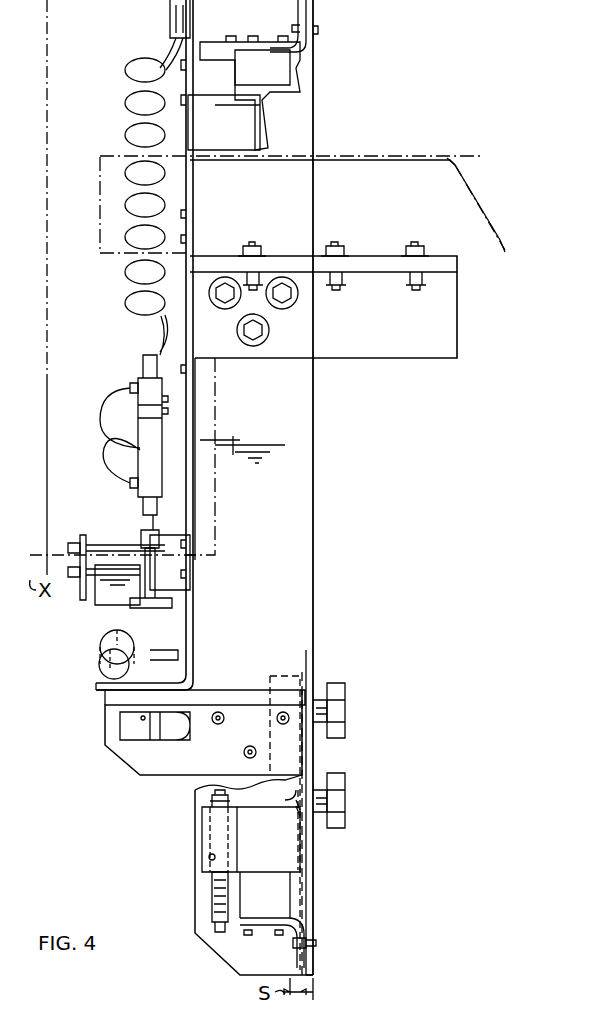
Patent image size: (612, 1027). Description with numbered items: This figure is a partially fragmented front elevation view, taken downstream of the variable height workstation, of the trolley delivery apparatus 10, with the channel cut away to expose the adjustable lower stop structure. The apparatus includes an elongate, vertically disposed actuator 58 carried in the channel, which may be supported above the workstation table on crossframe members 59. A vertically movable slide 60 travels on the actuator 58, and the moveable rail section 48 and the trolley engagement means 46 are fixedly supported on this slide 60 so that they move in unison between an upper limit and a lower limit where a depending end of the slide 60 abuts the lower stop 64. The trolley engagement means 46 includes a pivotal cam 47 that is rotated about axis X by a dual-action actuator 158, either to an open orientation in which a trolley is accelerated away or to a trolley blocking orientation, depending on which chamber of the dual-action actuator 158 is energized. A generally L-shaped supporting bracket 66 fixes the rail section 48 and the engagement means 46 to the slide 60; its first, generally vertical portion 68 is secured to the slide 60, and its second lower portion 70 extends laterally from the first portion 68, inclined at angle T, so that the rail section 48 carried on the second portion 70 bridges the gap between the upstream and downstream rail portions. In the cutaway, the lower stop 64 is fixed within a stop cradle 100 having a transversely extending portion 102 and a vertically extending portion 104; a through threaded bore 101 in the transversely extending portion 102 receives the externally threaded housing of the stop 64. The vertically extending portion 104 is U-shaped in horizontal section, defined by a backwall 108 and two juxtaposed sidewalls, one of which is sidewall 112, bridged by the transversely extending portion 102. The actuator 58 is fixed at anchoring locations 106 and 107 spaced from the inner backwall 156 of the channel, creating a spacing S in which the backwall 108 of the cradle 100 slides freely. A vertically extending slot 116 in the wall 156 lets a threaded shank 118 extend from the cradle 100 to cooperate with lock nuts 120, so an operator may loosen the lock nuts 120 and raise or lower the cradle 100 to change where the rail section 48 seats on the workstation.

The trolley delivery apparatus 10 is at (345, 113).
The trolley engagement means 46 is at (105, 511).
The pivotal cam 47 is at (100, 598).
The moveable rail section 48 is at (100, 650).
The actuator 58 is at (260, 58).
The crossframe members 59 is at (370, 158).
The slide 60 is at (162, 66).
The lower stop 64 is at (212, 905).
The supporting bracket 66 is at (168, 658).
The first portion 68 is at (193, 612).
The second lower portion 70 is at (147, 683).
The stop cradle 100 is at (187, 868).
The threaded bore 101 is at (209, 859).
The transversely extending portion 102 is at (205, 830).
The vertically extending portion 104 is at (270, 680).
The anchoring location 106 is at (318, 30).
The anchoring location 107 is at (316, 944).
The backwall 108 is at (302, 675).
The sidewall 112 is at (290, 855).
The slot 116 is at (313, 904).
The threaded shank 118 is at (303, 818).
The lock nuts 120 is at (345, 745).
The inner backwall 156 is at (308, 923).
The dual-action actuator 158 is at (125, 447).